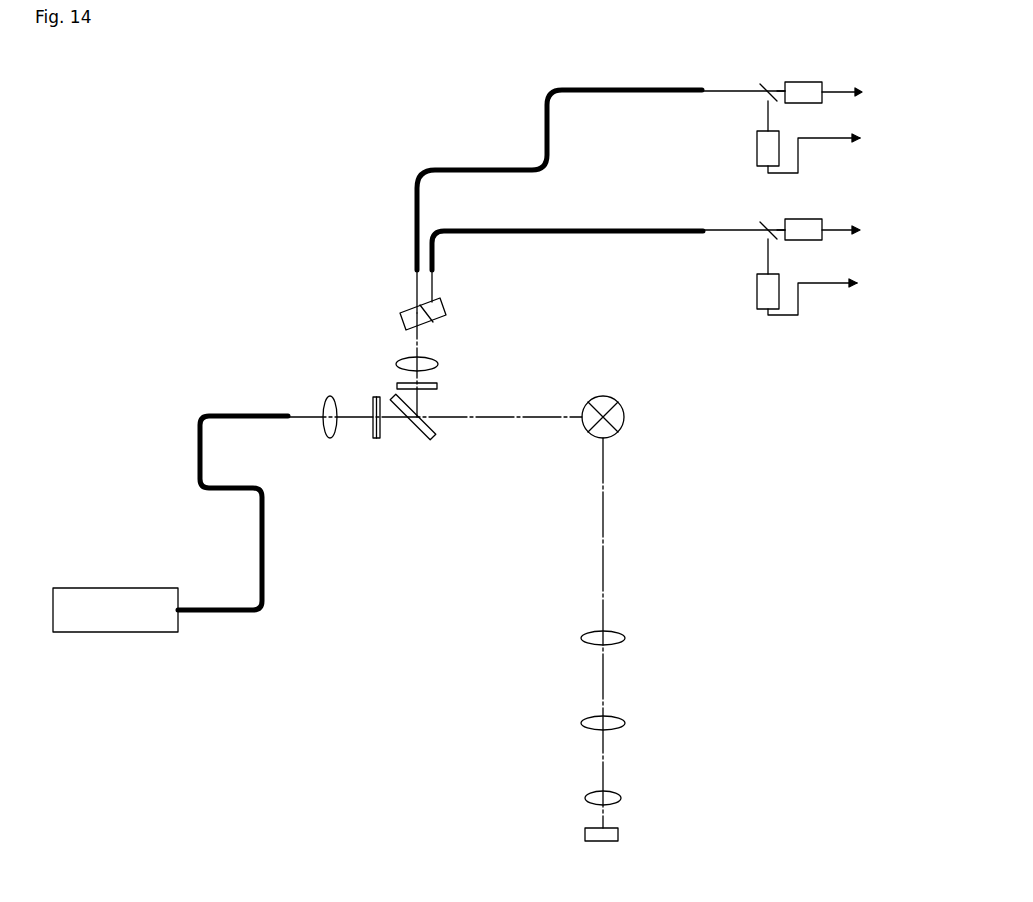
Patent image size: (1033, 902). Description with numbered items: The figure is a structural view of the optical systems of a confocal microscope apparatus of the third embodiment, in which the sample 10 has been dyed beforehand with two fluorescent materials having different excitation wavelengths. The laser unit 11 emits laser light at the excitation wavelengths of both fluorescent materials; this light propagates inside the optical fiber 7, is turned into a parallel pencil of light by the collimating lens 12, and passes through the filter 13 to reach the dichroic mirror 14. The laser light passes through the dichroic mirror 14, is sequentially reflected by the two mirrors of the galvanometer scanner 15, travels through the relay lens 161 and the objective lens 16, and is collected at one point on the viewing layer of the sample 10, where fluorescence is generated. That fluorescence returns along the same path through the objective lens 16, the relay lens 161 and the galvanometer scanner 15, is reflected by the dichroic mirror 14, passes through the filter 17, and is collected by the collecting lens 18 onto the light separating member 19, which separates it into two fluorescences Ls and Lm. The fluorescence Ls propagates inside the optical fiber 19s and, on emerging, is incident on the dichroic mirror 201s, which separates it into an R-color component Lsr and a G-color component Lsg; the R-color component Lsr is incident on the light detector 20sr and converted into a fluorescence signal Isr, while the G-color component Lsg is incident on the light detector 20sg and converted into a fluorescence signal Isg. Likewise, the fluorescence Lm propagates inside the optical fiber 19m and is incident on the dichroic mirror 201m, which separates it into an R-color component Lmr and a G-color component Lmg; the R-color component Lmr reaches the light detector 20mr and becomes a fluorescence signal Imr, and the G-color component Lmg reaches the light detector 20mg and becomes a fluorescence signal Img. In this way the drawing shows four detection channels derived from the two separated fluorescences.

The optical fiber 7 is at (266, 562).
The sample 10 is at (618, 829).
The laser unit 11 is at (100, 588).
The collimating lens 12 is at (330, 396).
The filter 13 is at (374, 440).
The dichroic mirror 14 is at (412, 430).
The galvanometer scanner 15 is at (597, 397).
The objective lens 16 is at (585, 800).
The relay lens 161 is at (578, 627).
The filter 17 is at (397, 385).
The collecting lens 18 is at (438, 361).
The light separating member 19 is at (400, 316).
The optical fiber 19s is at (581, 88).
The optical fiber 19m is at (620, 236).
The dichroic mirror 201s is at (760, 84).
The dichroic mirror 201m is at (760, 222).
The light detector 20sr is at (823, 72).
The light detector 20sg is at (757, 156).
The light detector 20mr is at (812, 219).
The light detector 20mg is at (757, 301).
The fluorescence Ls is at (412, 285).
The fluorescence Lm is at (437, 290).
The R-color component Lsr is at (776, 86).
The G-color component Lsg is at (766, 113).
The R-color component Lmr is at (775, 223).
The G-color component Lmg is at (764, 257).
The fluorescence signal Isr is at (873, 92).
The fluorescence signal Isg is at (874, 143).
The fluorescence signal Imr is at (873, 230).
The fluorescence signal Img is at (873, 283).